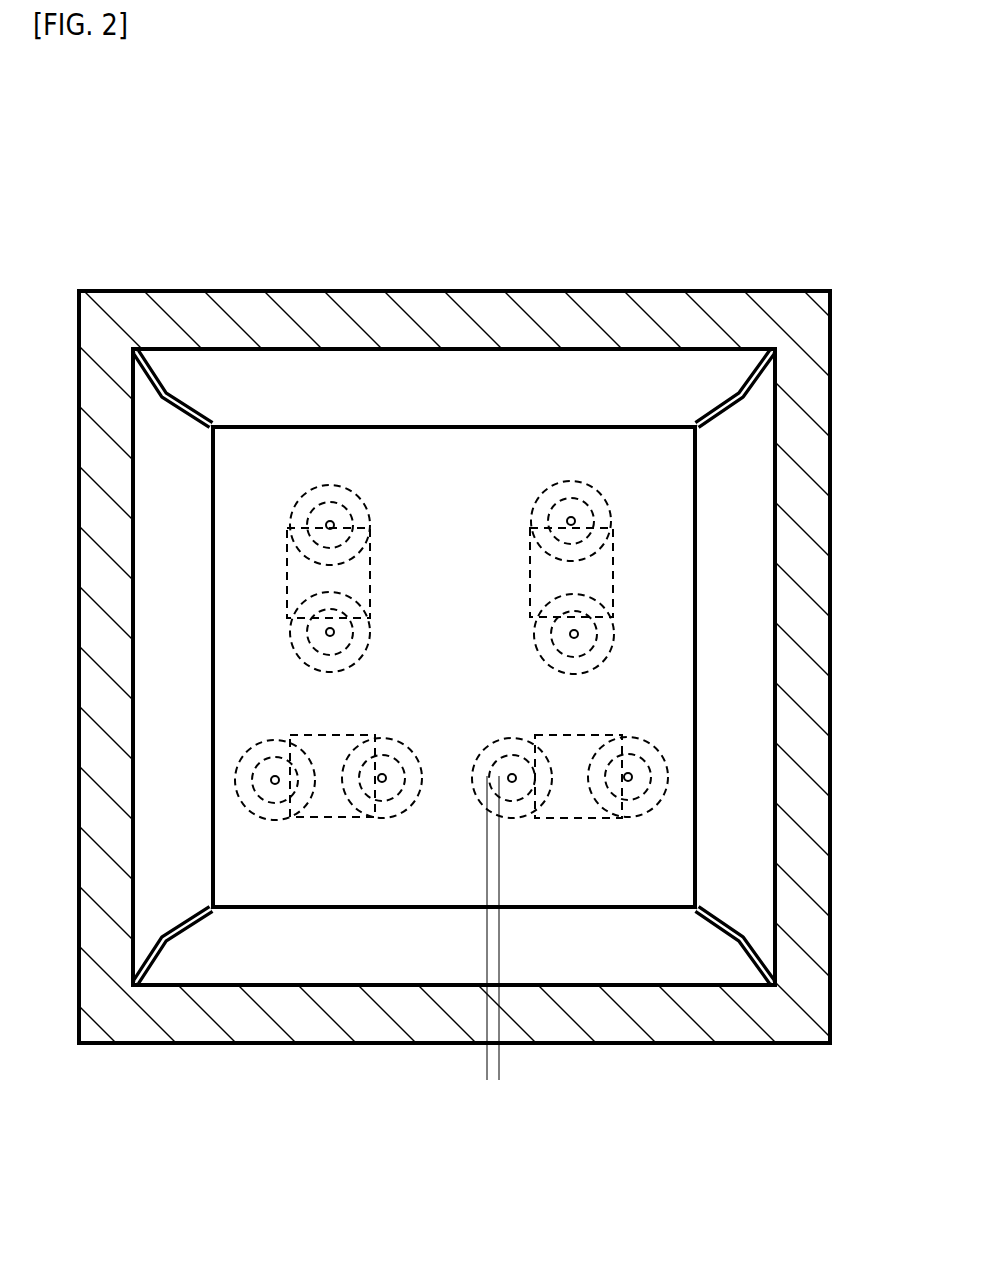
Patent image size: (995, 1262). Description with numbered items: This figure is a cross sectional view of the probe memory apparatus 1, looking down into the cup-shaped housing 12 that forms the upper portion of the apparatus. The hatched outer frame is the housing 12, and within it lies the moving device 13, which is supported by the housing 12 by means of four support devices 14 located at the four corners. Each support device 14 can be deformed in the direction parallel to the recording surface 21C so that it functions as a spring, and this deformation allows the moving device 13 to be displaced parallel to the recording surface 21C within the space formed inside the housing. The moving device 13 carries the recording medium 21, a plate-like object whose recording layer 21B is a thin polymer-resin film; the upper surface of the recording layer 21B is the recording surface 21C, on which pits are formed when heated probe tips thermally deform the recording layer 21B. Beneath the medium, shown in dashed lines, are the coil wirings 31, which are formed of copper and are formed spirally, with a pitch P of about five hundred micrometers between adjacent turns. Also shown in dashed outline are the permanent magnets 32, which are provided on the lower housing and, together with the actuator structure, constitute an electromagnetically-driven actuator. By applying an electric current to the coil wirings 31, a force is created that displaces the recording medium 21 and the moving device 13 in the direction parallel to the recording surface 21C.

The probe memory apparatus 1 is at (721, 230).
The cup-shaped housing 12 is at (256, 291).
The moving device 13 is at (456, 408).
The support device 14 is at (190, 421).
The recording medium 21 is at (213, 545).
The recording layer 21B is at (213, 628).
The recording surface 21C is at (234, 728).
The coil wiring 31 is at (613, 500).
The permanent magnet 32 is at (616, 580).
The pitch of the coil wiring P is at (528, 1070).